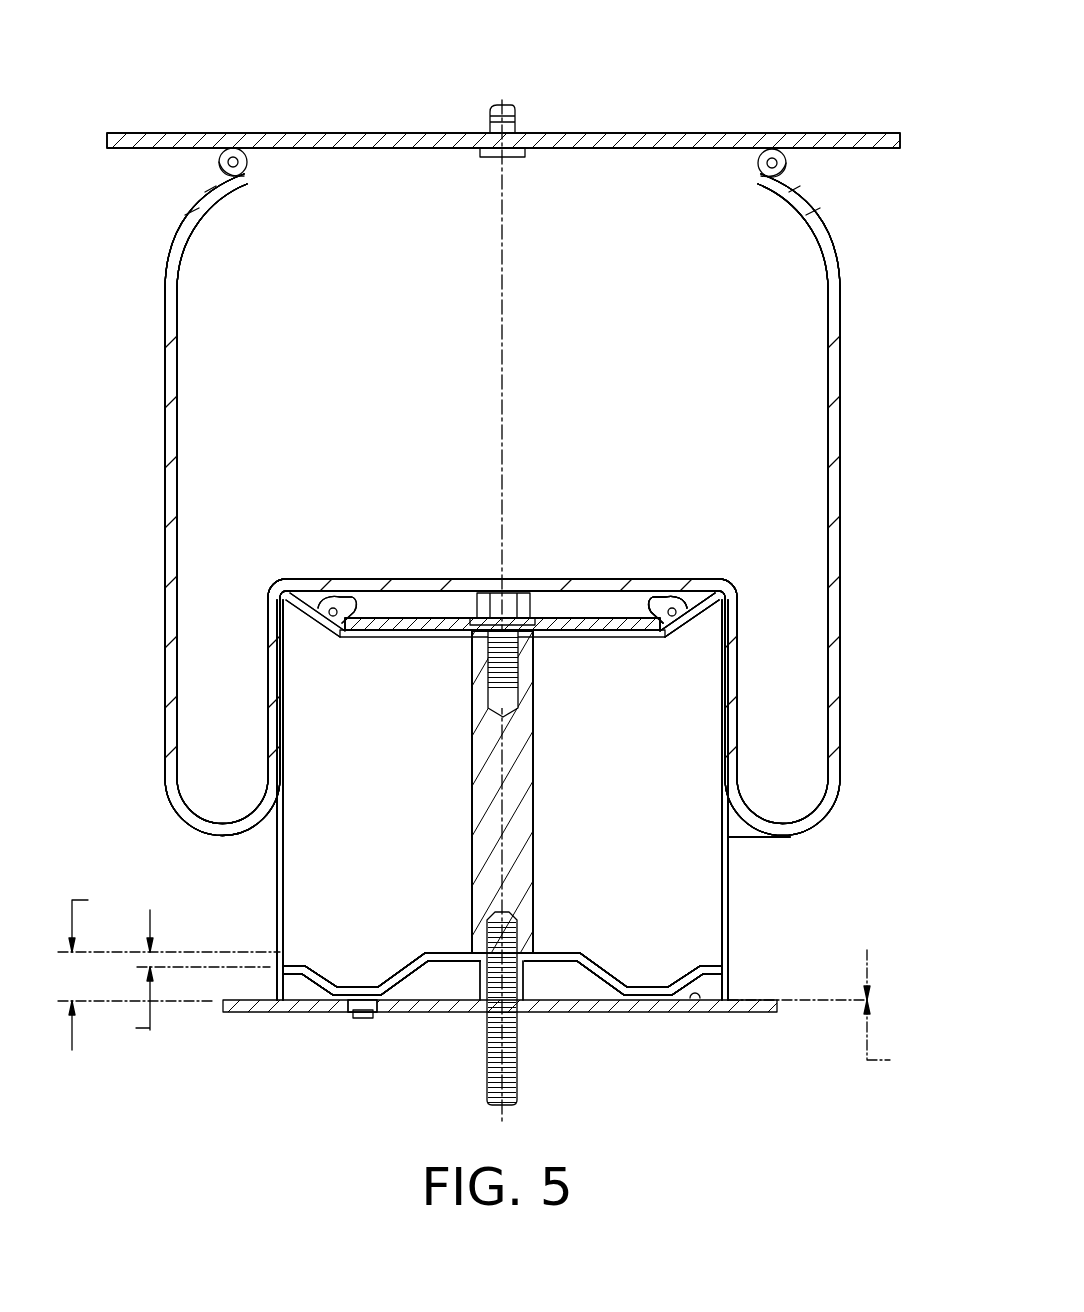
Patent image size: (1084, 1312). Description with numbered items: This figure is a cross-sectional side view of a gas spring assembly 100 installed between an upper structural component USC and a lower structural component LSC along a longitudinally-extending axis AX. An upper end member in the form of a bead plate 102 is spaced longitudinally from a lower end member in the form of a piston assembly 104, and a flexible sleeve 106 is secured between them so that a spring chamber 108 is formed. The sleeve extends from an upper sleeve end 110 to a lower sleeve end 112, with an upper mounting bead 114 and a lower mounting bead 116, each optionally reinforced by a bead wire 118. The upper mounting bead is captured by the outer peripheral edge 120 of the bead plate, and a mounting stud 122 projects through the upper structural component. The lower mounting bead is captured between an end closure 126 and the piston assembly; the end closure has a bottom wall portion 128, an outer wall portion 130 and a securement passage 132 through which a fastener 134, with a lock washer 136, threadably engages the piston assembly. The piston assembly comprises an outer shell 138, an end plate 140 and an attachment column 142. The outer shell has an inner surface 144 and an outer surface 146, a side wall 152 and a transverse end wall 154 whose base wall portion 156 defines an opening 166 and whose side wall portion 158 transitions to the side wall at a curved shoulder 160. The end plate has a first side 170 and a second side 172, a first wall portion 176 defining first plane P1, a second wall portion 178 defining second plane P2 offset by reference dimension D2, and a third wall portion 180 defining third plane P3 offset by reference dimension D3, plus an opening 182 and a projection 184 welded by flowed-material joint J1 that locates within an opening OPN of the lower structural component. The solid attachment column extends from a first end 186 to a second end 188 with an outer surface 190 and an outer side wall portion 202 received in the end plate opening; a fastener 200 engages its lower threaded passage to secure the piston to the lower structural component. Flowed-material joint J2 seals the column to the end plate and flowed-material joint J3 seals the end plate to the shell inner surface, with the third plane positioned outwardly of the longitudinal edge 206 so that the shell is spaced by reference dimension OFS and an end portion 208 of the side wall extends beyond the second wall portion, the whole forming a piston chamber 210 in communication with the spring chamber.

The gas spring assembly 100 is at (868, 360).
The bead plate 102 is at (615, 130).
The piston assembly 104 is at (790, 903).
The flexible sleeve 106 is at (858, 445).
The spring chamber 108 is at (330, 377).
The upper sleeve end 110 is at (705, 190).
The lower sleeve end 112 is at (722, 560).
The upper mounting bead 114 is at (805, 170).
The lower mounting bead 116 is at (696, 578).
The bead wire 118 is at (758, 178).
The outer peripheral edge 120 is at (219, 163).
The mounting stud 122 is at (476, 90).
The end closure 126 is at (604, 595).
The bottom wall portion 128 is at (552, 618).
The outer wall portion 130 is at (668, 606).
The securement passage 132 is at (527, 626).
The fastener 134 is at (505, 600).
The lock washer 136 is at (478, 612).
The outer shell 138 is at (750, 865).
The end plate 140 is at (422, 1013).
The attachment column 142 is at (555, 765).
The inner surface 144 is at (285, 735).
The outer surface 146 is at (272, 895).
The side wall 152 is at (290, 880).
The end wall 154 is at (330, 658).
The base wall portion 156 is at (390, 615).
The side wall portion 158 is at (322, 620).
The curved shoulder 160 is at (726, 590).
The opening 166 is at (396, 660).
The first side 170 is at (592, 990).
The second side 172 is at (592, 1012).
The first wall portion 176 is at (560, 955).
The second wall portion 178 is at (705, 972).
The third wall portion 180 is at (622, 1012).
The opening 182 is at (436, 1000).
The projection 184 is at (365, 1016).
The first end 186 is at (454, 672).
The second end 188 is at (462, 900).
The outer surface 190 is at (528, 845).
The fastener 200 is at (488, 1090).
The outer side wall portion 202 is at (536, 1000).
The longitudinal edge 206 is at (700, 1000).
The end portion 208 is at (737, 993).
The piston chamber 210 is at (358, 805).
The longitudinally-extending axis AX is at (508, 352).
The upper structural component USC is at (218, 132).
The lower structural component LSC is at (268, 1012).
The opening OPN is at (340, 1014).
The reference dimension OFS is at (835, 1011).
The first plane P1 is at (245, 952).
The second plane P2 is at (205, 967).
The third plane P3 is at (190, 1002).
The reference dimension D2 is at (111, 1008).
The reference dimension D3 is at (111, 919).
The flowed-material joint J1 is at (410, 1000).
The flowed-material joint J2 is at (458, 938).
The flowed-material joint J3 is at (288, 992).